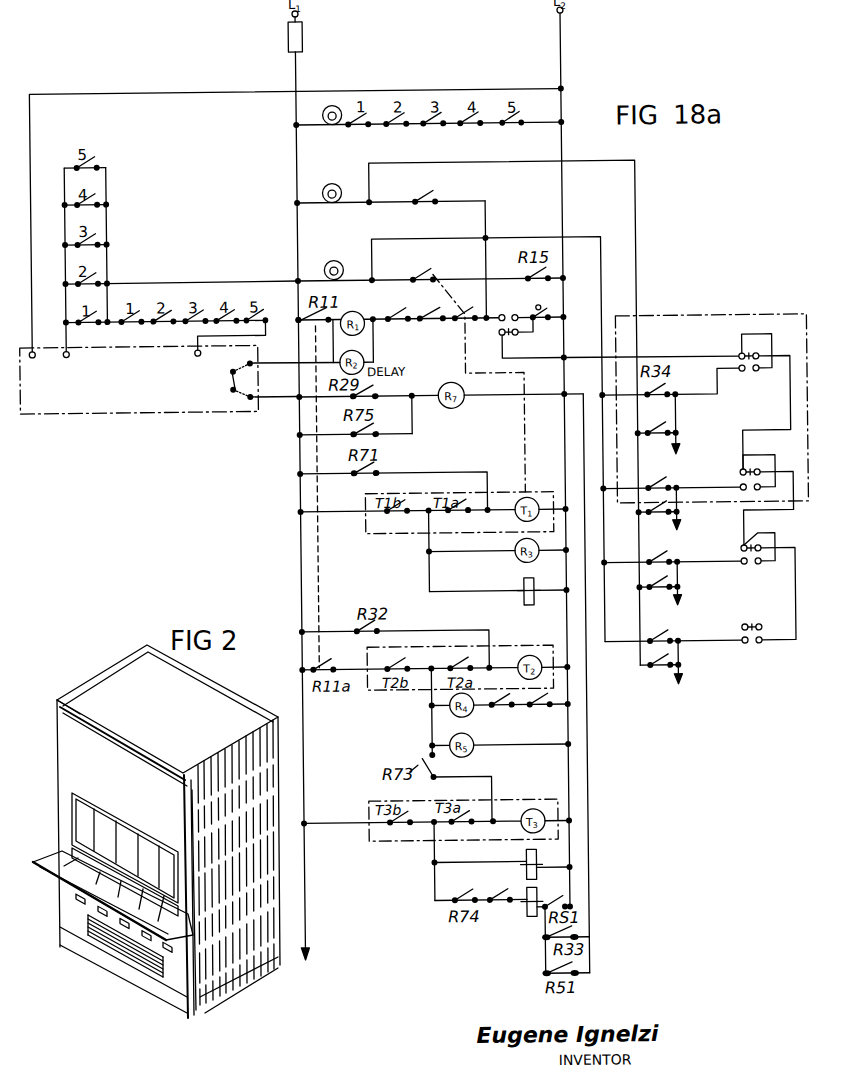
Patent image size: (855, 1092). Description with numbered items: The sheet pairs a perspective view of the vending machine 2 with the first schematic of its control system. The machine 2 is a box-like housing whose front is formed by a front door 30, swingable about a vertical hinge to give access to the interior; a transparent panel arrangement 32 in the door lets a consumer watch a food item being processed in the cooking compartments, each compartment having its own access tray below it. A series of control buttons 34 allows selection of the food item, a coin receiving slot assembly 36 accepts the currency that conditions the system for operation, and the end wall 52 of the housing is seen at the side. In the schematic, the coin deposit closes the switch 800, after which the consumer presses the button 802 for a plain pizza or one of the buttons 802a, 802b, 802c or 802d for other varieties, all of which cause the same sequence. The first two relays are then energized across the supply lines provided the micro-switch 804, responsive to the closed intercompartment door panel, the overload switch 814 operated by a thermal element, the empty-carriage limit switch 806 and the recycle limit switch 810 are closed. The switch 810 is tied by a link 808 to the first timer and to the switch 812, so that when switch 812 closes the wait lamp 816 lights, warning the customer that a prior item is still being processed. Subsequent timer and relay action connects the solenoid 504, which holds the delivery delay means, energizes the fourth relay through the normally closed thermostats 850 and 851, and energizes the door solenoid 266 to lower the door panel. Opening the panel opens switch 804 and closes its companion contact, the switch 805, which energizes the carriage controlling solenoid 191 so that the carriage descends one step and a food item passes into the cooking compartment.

In FIG. 2, the machine 2 is at (111, 655).
In FIG. 2, the front door 30 is at (72, 700).
In FIG. 2, the transparent panel arrangement 32 is at (132, 828).
In FIG. 2, the control buttons 34 is at (188, 904).
In FIG. 2, the coin receiving slot assembly 36 is at (193, 864).
In FIG. 2, the end wall 52 is at (257, 803).
In FIG. 18A, the switch 800 is at (219, 377).
In FIG. 18A, the button 802 is at (531, 337).
In FIG. 18A, the button 802a is at (733, 355).
In FIG. 18A, the push button 802b is at (737, 472).
In FIG. 18A, the push button 802c is at (736, 552).
In FIG. 18A, the push button 802d is at (736, 626).
In FIG. 18A, the micro-switch 804 is at (395, 307).
In FIG. 18A, the switch 805 is at (489, 907).
In FIG. 18A, the limit switch 806 is at (426, 333).
In FIG. 18A, the link 808 is at (458, 353).
In FIG. 18A, the recycle limit switch 810 is at (469, 307).
In FIG. 18A, the switch 812 is at (420, 275).
In FIG. 18A, the overload switch 814 is at (542, 304).
In FIG. 18A, the lamp 816 is at (328, 261).
In FIG. 18A, the thermostat 850 is at (498, 710).
In FIG. 18A, the thermostat 851 is at (542, 708).
In FIG. 18A, the solenoid 504 is at (516, 582).
In FIG. 18A, the door solenoid 266 is at (531, 855).
In FIG. 18A, the carriage controlling solenoid 191 is at (530, 896).